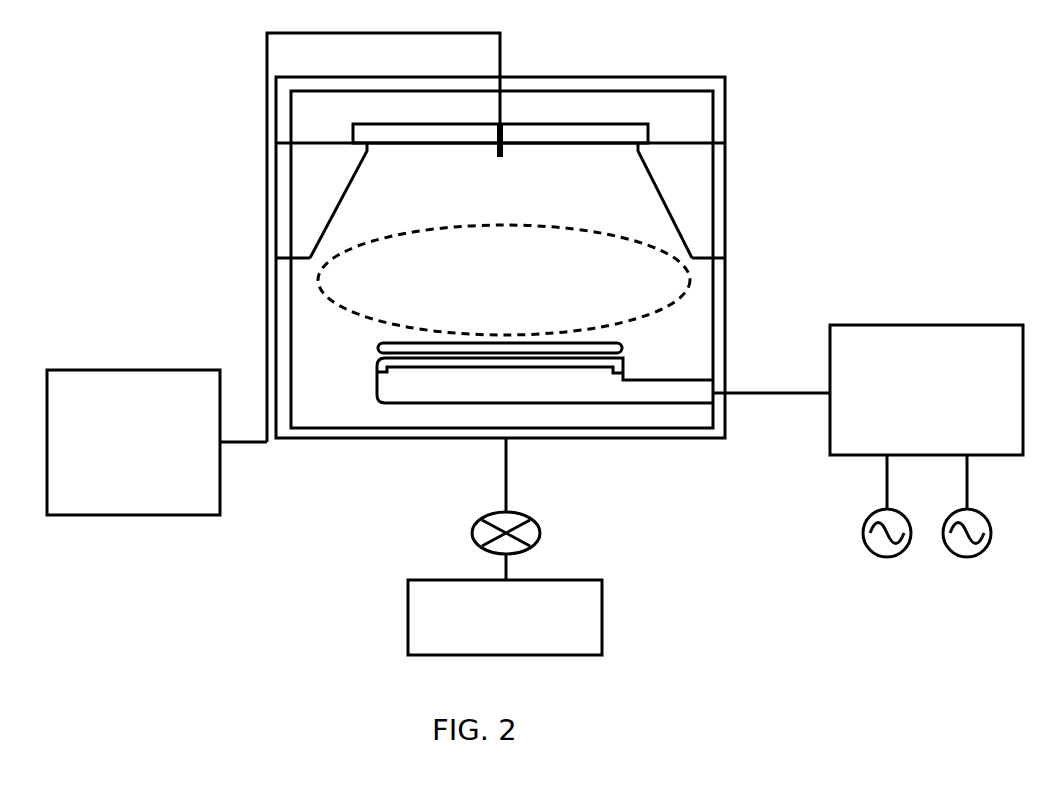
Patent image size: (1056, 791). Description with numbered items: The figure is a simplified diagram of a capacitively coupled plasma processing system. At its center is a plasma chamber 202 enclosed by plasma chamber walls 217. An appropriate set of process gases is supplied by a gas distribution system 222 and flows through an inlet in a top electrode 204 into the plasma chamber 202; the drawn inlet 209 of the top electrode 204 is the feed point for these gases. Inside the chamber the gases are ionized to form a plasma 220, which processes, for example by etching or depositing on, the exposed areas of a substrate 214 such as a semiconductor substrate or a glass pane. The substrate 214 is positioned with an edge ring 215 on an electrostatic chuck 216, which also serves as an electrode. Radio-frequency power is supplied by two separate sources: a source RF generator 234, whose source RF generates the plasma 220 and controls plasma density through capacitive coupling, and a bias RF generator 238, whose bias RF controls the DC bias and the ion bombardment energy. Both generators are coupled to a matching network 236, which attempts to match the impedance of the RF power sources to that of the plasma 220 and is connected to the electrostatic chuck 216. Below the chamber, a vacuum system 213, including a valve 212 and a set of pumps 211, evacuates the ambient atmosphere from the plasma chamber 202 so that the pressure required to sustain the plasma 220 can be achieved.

The plasma chamber 202 is at (500, 259).
The top electrode 204 is at (455, 137).
The gas inlet 209 is at (505, 135).
The set of pumps 211 is at (505, 604).
The valve 212 is at (540, 528).
The vacuum system 213 is at (506, 468).
The substrate 214 is at (622, 346).
The edge ring 215 is at (378, 353).
The electrostatic chuck 216 is at (545, 380).
The plasma chamber walls 217 is at (726, 302).
The plasma 220 is at (504, 280).
The gas distribution system 222 is at (157, 442).
The source RF generator 234 is at (863, 540).
The matching network 236 is at (868, 390).
The bias RF generator 238 is at (991, 522).